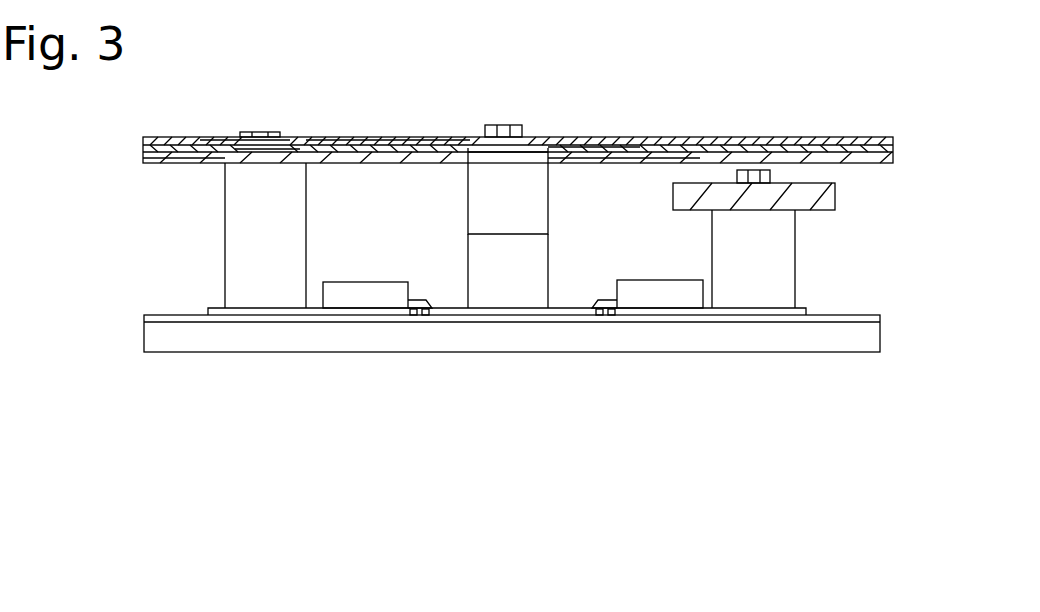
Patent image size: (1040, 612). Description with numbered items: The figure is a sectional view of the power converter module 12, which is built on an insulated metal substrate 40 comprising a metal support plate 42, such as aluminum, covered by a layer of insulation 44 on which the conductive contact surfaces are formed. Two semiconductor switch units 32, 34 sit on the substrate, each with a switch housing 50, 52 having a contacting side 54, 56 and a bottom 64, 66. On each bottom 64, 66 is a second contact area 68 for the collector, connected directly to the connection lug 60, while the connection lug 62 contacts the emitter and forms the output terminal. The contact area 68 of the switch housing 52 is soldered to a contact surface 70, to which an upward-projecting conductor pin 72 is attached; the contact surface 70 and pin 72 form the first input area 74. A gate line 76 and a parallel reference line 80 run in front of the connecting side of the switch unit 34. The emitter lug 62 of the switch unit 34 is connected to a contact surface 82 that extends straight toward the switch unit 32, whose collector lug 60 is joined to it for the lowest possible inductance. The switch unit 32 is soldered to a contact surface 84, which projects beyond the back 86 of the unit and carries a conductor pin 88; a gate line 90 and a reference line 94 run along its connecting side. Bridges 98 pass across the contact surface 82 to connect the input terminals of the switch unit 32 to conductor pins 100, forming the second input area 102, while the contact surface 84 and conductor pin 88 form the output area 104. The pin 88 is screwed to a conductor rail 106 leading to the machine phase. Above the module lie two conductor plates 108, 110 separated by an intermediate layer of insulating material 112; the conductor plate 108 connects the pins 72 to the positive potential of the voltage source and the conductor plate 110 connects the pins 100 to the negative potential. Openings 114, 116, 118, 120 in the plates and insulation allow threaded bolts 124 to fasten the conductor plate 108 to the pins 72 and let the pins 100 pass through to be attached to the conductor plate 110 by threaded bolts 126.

The power converter module 12 is at (382, 78).
The second semiconductor switch unit 32 is at (665, 280).
The first semiconductor switch unit 34 is at (356, 282).
The insulated metal substrate 40 is at (537, 308).
The support plate 42 is at (862, 350).
The layer of insulation 44 is at (858, 318).
The switch housing 50 is at (680, 318).
The switch housing 52 is at (345, 318).
The contacting side 54 is at (610, 298).
The contacting side 56 is at (428, 298).
The connection lug 60 is at (602, 298).
The connection lug 62 is at (434, 298).
The bottom 64 is at (645, 318).
The bottom 66 is at (388, 318).
The second contact area 68 is at (312, 318).
The contact surface 70 is at (240, 318).
The conductor pin 72 is at (245, 258).
The first input area 74 is at (193, 292).
The gate line 76 is at (412, 318).
The reference line 80 is at (424, 318).
The contact surface 82 is at (485, 272).
The contact surface 84 is at (790, 318).
The back 86 is at (783, 230).
The conductor pin 88 is at (705, 283).
The gate line 90 is at (612, 318).
The reference line 94 is at (590, 318).
The bridge 98 is at (490, 312).
The conductor pin 100 is at (518, 210).
The second input area 102 is at (525, 124).
The output area 104 is at (880, 189).
The conductor rail 106 is at (805, 190).
The conductor plate 108 is at (200, 165).
The conductor plate 110 is at (768, 137).
The intermediate layer of insulating material 112 is at (314, 137).
The opening 114 is at (583, 152).
The opening 116 is at (207, 137).
The opening 118 is at (558, 148).
The opening 120 is at (235, 137).
The threaded bolt 124 is at (270, 120).
The threaded bolt 126 is at (503, 125).